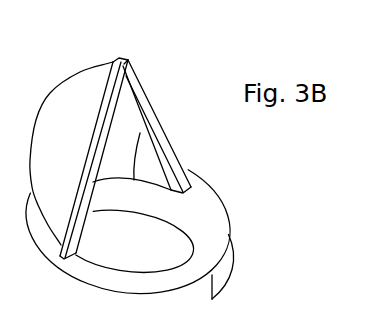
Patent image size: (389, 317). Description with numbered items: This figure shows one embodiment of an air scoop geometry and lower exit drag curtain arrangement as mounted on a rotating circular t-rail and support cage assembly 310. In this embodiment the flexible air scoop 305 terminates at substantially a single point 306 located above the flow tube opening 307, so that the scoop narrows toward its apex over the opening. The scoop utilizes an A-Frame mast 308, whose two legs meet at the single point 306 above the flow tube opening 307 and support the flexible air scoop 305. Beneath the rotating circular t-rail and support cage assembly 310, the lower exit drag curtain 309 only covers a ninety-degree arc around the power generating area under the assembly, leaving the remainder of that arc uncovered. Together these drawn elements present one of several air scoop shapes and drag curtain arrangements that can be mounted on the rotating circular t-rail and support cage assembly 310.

The flexible air scoop 305 is at (100, 60).
The single point 306 is at (118, 60).
The flow tube opening 307 is at (187, 213).
The A-Frame mast 308 is at (155, 103).
The lower exit drag curtain 309 is at (235, 276).
The rotating circular t-rail and support cage assembly 310 is at (237, 220).